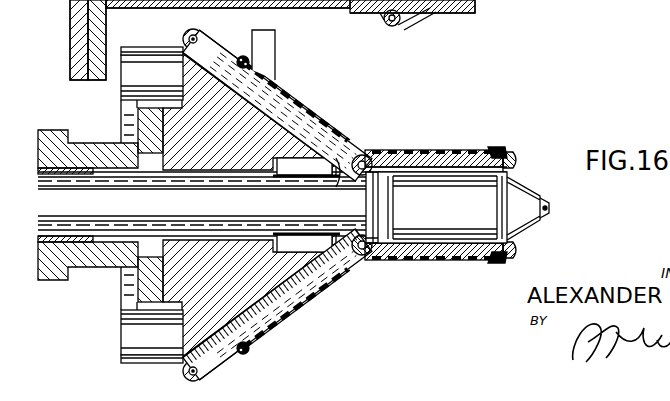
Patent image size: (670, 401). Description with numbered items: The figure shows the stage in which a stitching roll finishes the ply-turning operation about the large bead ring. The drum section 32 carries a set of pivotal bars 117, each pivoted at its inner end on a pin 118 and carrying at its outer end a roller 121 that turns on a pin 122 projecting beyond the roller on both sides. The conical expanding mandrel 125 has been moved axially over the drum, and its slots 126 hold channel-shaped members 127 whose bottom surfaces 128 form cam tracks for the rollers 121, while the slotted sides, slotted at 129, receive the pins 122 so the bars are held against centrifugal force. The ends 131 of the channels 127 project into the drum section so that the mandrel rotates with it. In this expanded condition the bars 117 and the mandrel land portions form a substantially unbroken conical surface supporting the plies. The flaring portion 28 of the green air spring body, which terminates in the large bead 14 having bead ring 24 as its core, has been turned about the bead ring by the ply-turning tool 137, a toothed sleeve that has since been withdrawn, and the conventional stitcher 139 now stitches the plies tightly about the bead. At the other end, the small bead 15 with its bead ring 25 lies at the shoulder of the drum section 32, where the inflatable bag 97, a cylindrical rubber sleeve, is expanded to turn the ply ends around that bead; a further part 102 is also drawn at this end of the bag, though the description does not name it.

The large bead 14 is at (243, 56).
The small bead 15 is at (509, 156).
The bead ring 24 is at (249, 205).
The bead ring 25 is at (516, 165).
The flaring portion 28 is at (330, 117).
The drum section 32 is at (462, 150).
The inflatable bag 97 is at (482, 200).
The tip 102 is at (547, 203).
The bar 117 is at (277, 100).
The pin 118 is at (354, 182).
The roller 121 is at (200, 18).
The pin 122 is at (205, 38).
The expanding mandrel 125 is at (217, 157).
The slot 126 is at (197, 67).
The channel-shaped member 127 is at (331, 163).
The bottom surface 128 is at (312, 284).
The slot 129 is at (346, 139).
The end 131 is at (327, 243).
The ply-turning tool 137 is at (167, 28).
The stitcher 139 is at (268, 57).